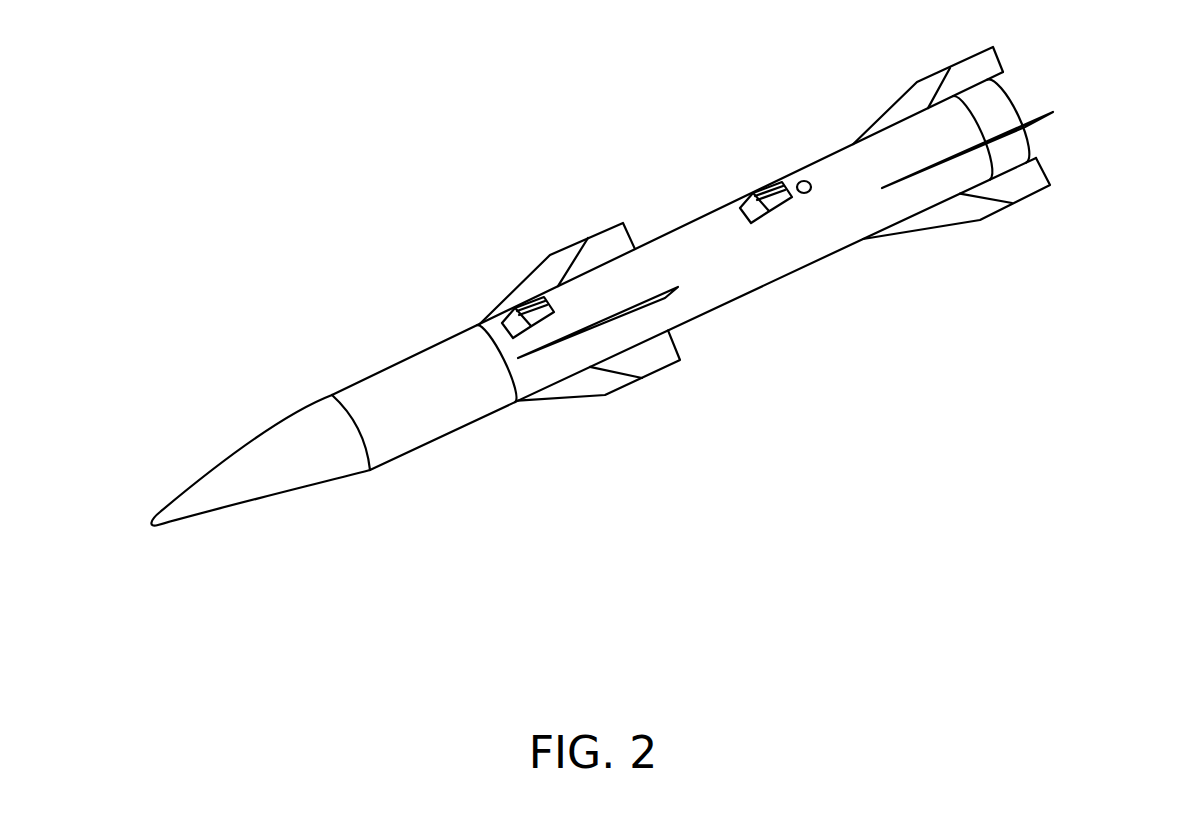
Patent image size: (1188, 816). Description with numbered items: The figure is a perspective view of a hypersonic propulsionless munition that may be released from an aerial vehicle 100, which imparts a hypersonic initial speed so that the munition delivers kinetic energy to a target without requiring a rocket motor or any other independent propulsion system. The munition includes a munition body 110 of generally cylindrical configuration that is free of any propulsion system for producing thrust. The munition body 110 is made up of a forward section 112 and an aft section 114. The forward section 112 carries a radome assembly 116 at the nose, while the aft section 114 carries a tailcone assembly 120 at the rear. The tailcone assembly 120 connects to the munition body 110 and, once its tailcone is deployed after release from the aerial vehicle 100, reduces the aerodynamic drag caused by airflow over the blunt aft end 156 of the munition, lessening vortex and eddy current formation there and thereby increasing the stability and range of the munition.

The aerial vehicle 100 is at (659, 264).
The munition body 110 is at (517, 226).
The forward section 112 is at (385, 319).
The aft section 114 is at (753, 146).
The radome assembly 116 is at (232, 403).
The tailcone assembly 120 is at (1011, 121).
The blunt aft end 156 is at (1028, 156).